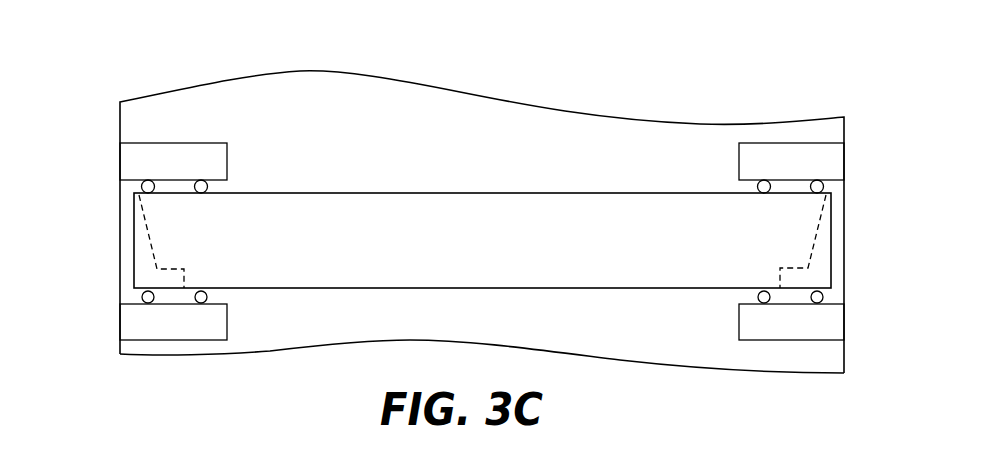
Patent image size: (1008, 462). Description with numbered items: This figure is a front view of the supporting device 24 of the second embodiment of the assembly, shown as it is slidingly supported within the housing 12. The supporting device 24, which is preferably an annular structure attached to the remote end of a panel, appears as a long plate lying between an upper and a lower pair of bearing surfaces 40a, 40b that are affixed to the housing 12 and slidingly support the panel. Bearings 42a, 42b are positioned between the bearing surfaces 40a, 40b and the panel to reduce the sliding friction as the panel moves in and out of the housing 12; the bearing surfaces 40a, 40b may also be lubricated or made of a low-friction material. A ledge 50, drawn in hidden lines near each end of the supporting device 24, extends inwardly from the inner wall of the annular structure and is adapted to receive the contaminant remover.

The housing 12 is at (315, 88).
The supporting device 24 is at (302, 265).
The bearing surface 40a is at (136, 162).
The bearing surface 40b is at (138, 325).
The bearing 42a is at (141, 296).
The bearing 42b is at (823, 296).
The ledge 50 is at (171, 278).